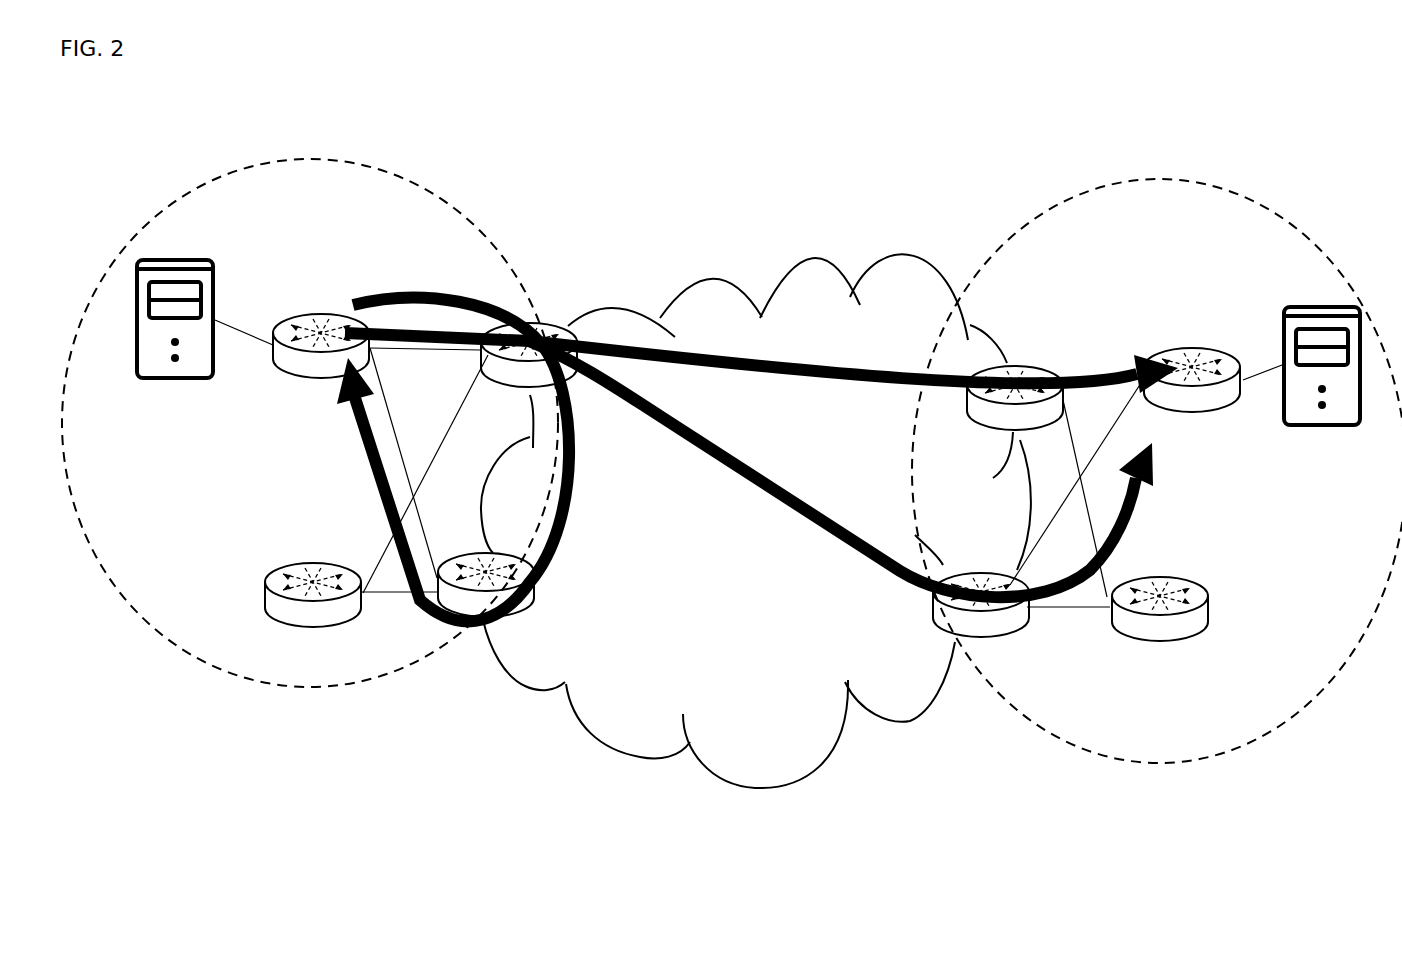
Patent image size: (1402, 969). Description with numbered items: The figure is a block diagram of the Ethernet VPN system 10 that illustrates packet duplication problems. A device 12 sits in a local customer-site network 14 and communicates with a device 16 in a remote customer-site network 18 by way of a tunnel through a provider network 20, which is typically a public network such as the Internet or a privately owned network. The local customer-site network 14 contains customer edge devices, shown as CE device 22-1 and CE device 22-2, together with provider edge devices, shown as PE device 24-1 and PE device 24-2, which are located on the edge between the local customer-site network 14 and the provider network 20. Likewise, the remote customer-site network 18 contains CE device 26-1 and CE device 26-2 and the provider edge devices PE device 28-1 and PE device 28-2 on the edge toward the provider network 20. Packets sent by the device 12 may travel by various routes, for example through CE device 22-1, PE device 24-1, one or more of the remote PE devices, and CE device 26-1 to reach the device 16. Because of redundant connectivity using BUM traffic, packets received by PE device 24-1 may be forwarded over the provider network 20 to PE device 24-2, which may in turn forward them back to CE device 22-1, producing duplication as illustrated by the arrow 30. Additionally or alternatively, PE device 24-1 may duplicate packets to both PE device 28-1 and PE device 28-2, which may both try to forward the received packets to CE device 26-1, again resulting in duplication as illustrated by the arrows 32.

The Ethernet VPN system 10 is at (970, 158).
The device 12 is at (172, 258).
The local customer-site network 14 is at (320, 158).
The device 16 is at (1321, 305).
The remote customer-site network 18 is at (1160, 178).
The provider network 20 is at (736, 288).
The CE device 22-1 is at (321, 316).
The CE device 22-2 is at (312, 628).
The PE device 24-1 is at (553, 323).
The PE device 24-2 is at (486, 620).
The CE device 26-1 is at (1192, 349).
The CE device 26-2 is at (1160, 640).
The PE device 28-1 is at (1015, 367).
The PE device 28-2 is at (977, 635).
The arrow 30 is at (573, 508).
The arrows 32 is at (838, 380).